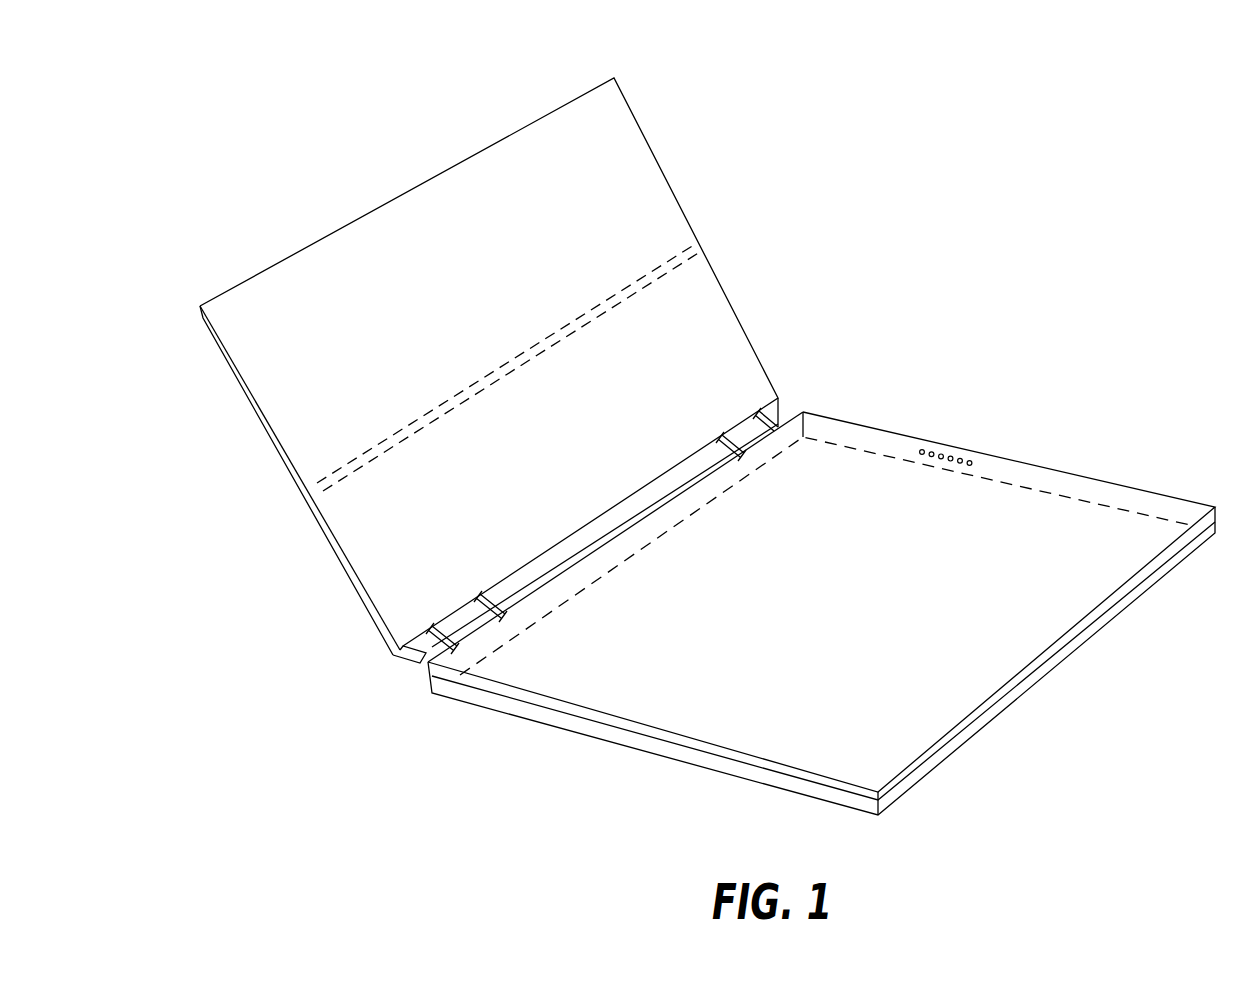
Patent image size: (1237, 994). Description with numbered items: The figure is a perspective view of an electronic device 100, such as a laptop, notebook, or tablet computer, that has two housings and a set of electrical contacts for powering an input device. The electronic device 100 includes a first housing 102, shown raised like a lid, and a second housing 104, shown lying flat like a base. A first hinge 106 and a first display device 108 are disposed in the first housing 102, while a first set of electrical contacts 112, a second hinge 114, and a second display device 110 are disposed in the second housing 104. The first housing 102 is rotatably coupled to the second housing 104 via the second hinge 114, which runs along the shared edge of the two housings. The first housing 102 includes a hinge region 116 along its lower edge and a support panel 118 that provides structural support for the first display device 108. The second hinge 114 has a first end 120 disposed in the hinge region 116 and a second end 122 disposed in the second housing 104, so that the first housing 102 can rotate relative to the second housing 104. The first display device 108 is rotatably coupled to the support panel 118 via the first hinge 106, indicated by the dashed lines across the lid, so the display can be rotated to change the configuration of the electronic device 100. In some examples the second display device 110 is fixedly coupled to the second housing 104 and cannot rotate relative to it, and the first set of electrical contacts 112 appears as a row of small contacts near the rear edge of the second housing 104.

The electronic device 100 is at (831, 46).
The first housing 102 is at (313, 243).
The second housing 104 is at (568, 730).
The first hinge 106 is at (458, 390).
The first display device 108 is at (513, 292).
The second display device 110 is at (823, 618).
The first set of electrical contacts 112 is at (978, 460).
The second hinge 114 is at (727, 452).
The hinge region 116 is at (418, 662).
The support panel 118 is at (345, 562).
The first end 120 is at (740, 432).
The second end 122 is at (747, 460).